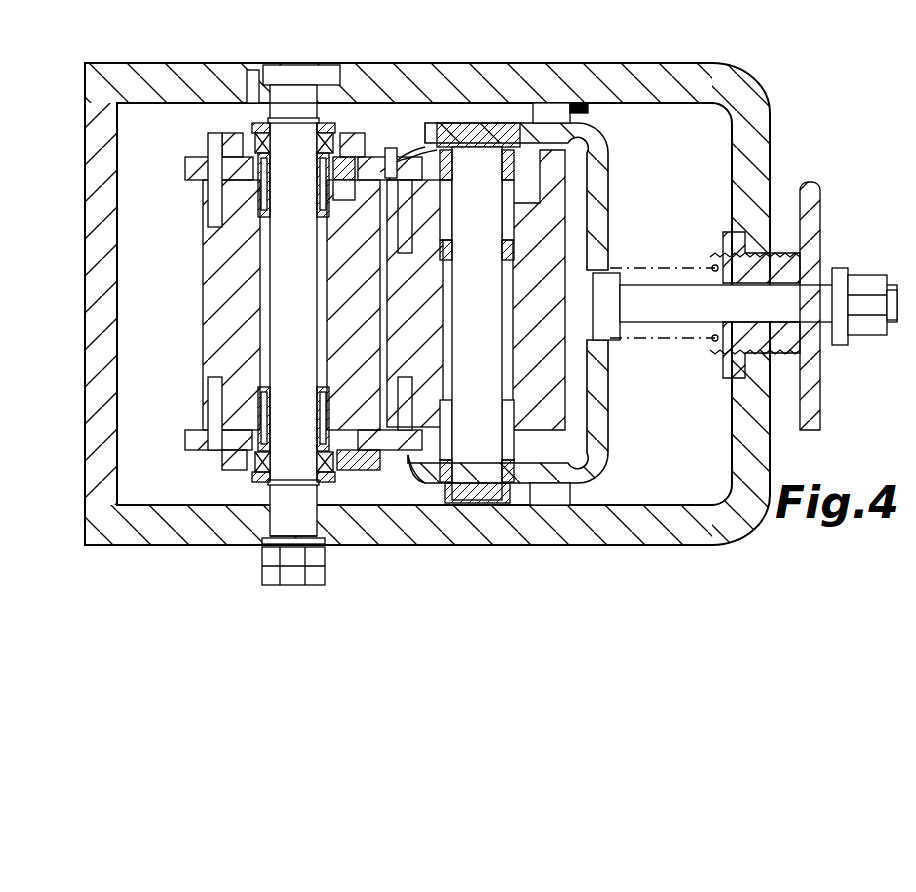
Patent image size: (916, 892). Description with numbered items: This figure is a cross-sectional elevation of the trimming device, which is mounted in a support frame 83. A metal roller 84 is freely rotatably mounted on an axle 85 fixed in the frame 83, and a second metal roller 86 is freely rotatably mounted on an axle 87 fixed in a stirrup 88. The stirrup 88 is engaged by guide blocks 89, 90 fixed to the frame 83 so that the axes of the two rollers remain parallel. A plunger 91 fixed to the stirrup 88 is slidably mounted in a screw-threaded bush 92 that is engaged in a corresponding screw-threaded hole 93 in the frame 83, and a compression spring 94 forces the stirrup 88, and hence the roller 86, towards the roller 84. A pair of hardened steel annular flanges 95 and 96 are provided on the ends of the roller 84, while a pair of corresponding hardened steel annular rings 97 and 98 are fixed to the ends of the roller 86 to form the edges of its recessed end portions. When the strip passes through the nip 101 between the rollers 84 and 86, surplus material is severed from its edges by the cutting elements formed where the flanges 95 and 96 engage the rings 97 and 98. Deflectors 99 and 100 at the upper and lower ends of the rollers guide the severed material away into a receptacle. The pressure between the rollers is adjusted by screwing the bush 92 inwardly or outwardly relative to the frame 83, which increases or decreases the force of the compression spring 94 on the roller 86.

The support frame 83 is at (97, 90).
The metal roller 84 is at (213, 341).
The axle 85 is at (275, 292).
The metal roller 86 is at (560, 227).
The axle 87 is at (478, 313).
The stirrup 88 is at (612, 165).
The guide block 89 is at (572, 500).
The guide block 90 is at (597, 103).
The plunger 91 is at (790, 300).
The screw-threaded bush 92 is at (800, 195).
The screw-threaded hole 93 is at (742, 242).
The compression spring 94 is at (695, 348).
The hardened steel annular flange 95 is at (385, 470).
The hardened steel annular flange 96 is at (403, 165).
The hardened steel annular ring 97 is at (370, 410).
The hardened steel annular ring 98 is at (340, 243).
The deflector 99 is at (413, 152).
The deflector 100 is at (402, 447).
The nip 101 is at (352, 258).